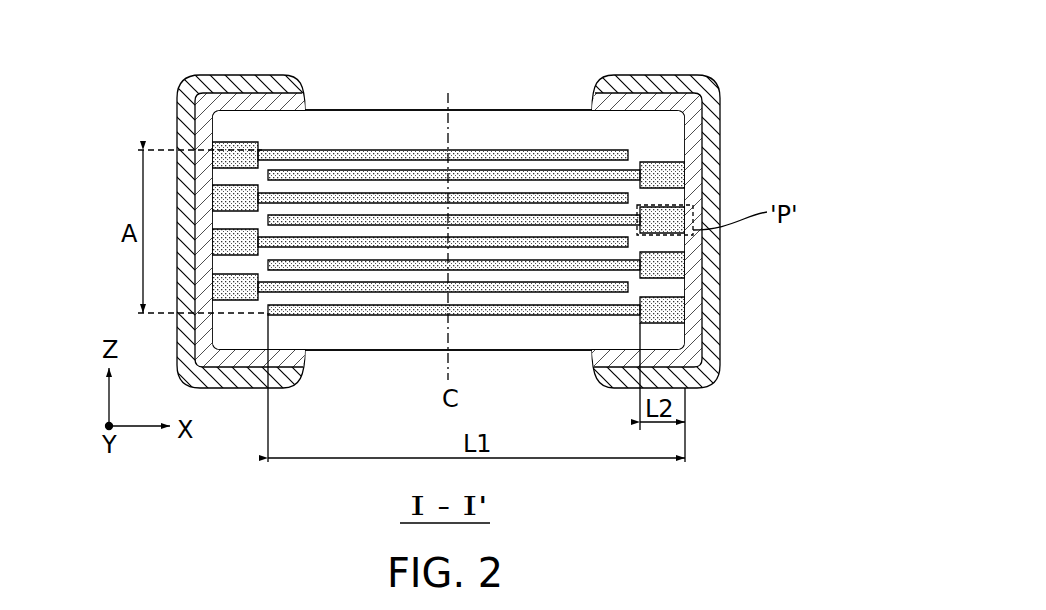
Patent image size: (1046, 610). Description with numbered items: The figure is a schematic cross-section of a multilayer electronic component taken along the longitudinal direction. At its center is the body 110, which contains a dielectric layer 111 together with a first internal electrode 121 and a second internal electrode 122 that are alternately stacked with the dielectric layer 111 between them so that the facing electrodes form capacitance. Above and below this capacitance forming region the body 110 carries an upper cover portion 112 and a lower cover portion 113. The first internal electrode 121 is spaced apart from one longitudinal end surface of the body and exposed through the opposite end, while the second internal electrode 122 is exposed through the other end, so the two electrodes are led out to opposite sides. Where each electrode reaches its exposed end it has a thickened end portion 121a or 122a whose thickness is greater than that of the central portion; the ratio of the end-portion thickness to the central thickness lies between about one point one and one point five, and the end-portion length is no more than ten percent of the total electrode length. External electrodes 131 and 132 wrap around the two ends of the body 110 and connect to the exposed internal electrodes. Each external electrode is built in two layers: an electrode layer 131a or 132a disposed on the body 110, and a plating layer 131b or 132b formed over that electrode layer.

The body 110 is at (383, 110).
The dielectric layer 111 is at (332, 185).
The cover portion 112 is at (470, 126).
The cover portion 113 is at (392, 334).
The first internal electrode 121 is at (419, 160).
The end portion 121a is at (241, 149).
The second internal electrode 122 is at (476, 172).
The end portion 122a is at (660, 170).
The external electrode 131 is at (168, 231).
The electrode layer 131a is at (177, 112).
The plating layer 131b is at (177, 135).
The external electrode 132 is at (730, 231).
The electrode layer 132a is at (703, 140).
The plating layer 132b is at (708, 162).